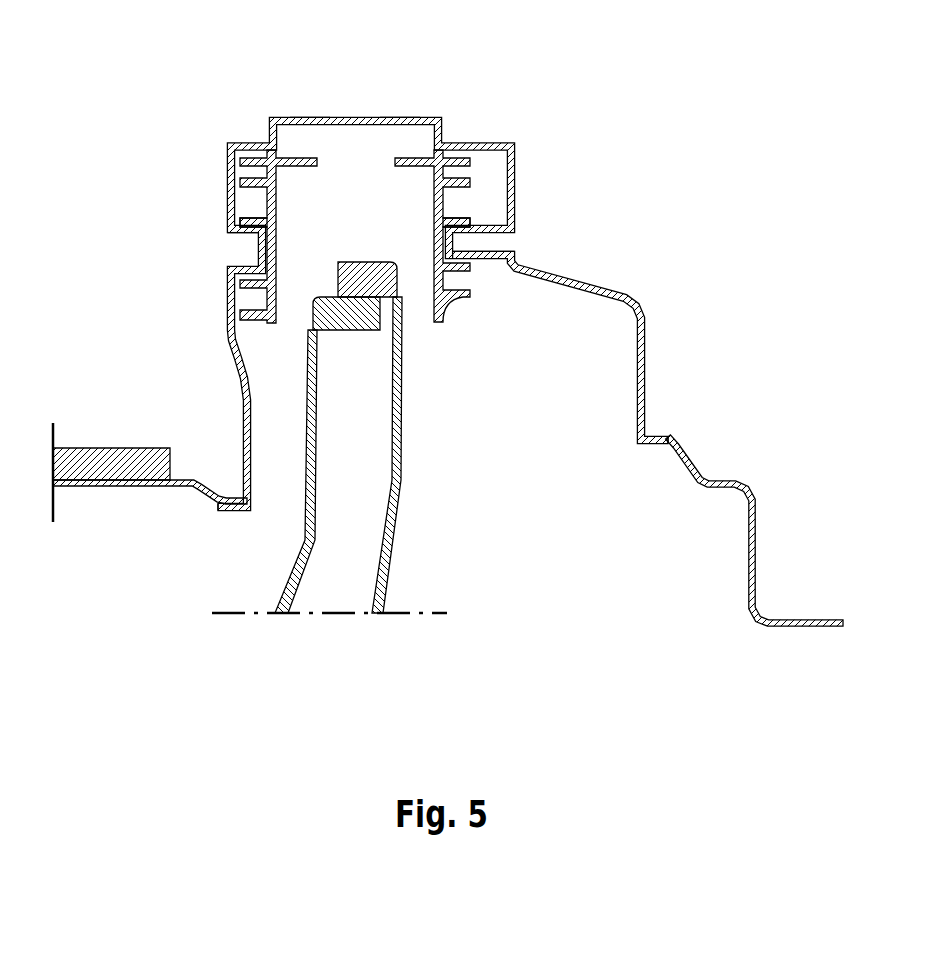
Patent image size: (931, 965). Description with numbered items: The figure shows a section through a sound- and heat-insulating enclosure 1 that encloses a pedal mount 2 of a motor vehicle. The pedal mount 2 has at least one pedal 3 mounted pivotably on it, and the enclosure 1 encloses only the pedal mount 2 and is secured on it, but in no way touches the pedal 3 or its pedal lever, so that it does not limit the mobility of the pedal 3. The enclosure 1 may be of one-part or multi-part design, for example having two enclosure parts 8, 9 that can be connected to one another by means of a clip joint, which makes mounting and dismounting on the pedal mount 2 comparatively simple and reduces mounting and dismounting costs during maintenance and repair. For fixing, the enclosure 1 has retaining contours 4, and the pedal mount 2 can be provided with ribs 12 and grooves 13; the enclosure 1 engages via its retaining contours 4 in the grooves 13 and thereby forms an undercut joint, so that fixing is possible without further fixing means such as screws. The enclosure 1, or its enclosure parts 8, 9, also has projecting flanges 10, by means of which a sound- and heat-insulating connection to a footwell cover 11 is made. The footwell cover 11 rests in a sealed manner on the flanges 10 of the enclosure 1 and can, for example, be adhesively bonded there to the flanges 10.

The enclosure 1 is at (259, 128).
The pedal mount 2 is at (434, 223).
The pedal 3 is at (357, 560).
The retaining contour 4 is at (453, 245).
The enclosure part 8 is at (317, 123).
The enclosure part 9 is at (400, 122).
The flange 10 is at (227, 510).
The footwell cover 11 is at (193, 482).
The rib 12 is at (236, 217).
The groove 13 is at (453, 257).